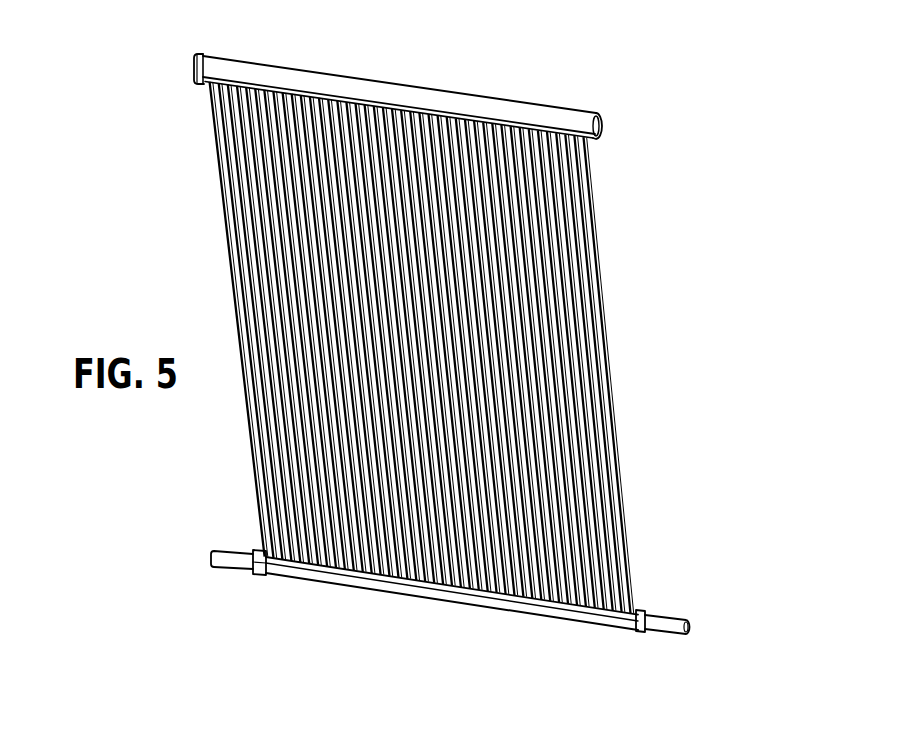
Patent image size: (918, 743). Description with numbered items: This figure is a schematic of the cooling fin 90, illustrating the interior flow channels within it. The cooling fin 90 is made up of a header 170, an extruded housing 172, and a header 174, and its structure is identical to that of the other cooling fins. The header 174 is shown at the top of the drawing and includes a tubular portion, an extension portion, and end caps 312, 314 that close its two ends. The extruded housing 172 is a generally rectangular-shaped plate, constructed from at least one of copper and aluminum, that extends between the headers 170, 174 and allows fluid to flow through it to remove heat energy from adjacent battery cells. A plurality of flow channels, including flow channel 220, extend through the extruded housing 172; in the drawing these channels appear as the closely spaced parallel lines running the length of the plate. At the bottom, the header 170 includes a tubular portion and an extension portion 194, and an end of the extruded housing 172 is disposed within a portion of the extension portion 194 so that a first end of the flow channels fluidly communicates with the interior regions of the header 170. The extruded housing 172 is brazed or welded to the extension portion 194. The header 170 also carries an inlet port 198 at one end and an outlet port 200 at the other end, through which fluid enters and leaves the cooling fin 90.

The cooling fin 90 is at (456, 56).
The header 174 is at (254, 68).
The end cap 312 is at (187, 53).
The end cap 314 is at (593, 111).
The extruded housing 172 is at (603, 360).
The header 170 is at (360, 580).
The inlet port 198 is at (218, 555).
The flow channel 220 is at (257, 565).
The extension portion 194 is at (634, 600).
The outlet port 200 is at (660, 610).